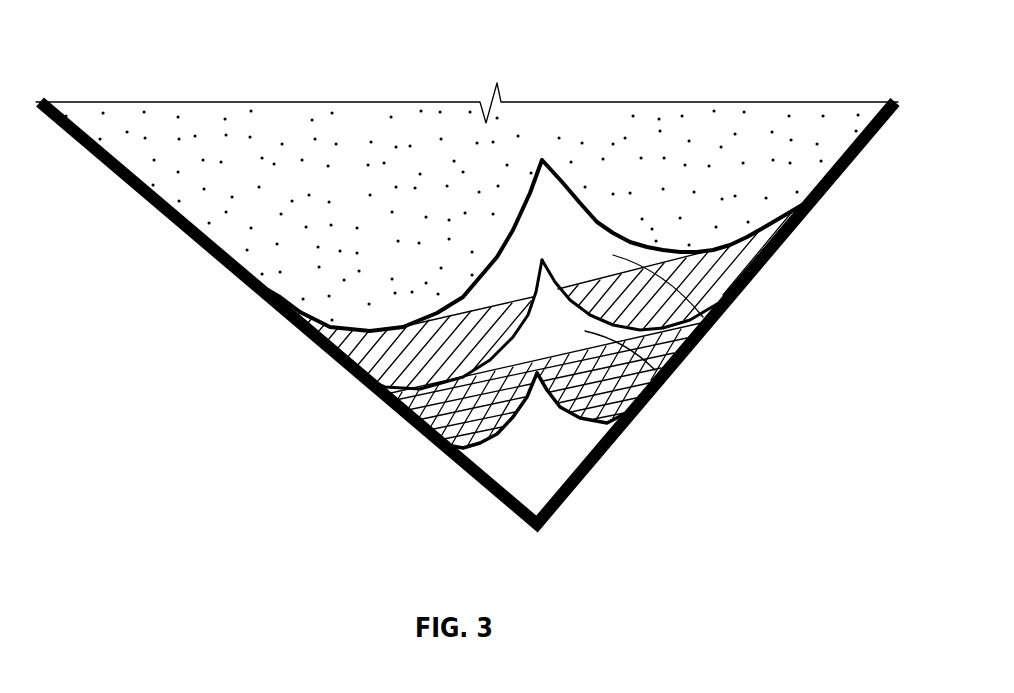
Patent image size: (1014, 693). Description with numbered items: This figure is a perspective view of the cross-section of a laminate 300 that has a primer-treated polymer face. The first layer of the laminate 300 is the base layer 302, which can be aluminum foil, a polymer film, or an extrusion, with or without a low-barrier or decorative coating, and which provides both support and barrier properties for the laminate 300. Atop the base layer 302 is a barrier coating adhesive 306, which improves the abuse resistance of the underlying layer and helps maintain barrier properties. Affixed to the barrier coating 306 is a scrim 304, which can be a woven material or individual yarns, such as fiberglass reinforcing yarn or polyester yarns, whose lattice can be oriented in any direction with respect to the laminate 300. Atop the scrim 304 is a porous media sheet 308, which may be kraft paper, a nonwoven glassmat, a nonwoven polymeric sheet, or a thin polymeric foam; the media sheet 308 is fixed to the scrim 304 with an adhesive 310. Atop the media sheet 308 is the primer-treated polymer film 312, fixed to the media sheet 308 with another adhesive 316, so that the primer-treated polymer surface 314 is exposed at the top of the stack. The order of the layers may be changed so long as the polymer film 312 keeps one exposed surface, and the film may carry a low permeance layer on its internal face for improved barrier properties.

The laminate 300 is at (124, 42).
The base layer 302 is at (553, 485).
The scrim 304 is at (420, 425).
The barrier coating adhesive 306 is at (587, 423).
The porous media sheet 308 is at (365, 352).
The adhesive 310 is at (667, 380).
The primer-treated polymer film 312 is at (287, 276).
The primer-treated polymer surface 314 is at (222, 235).
The adhesive 316 is at (720, 316).